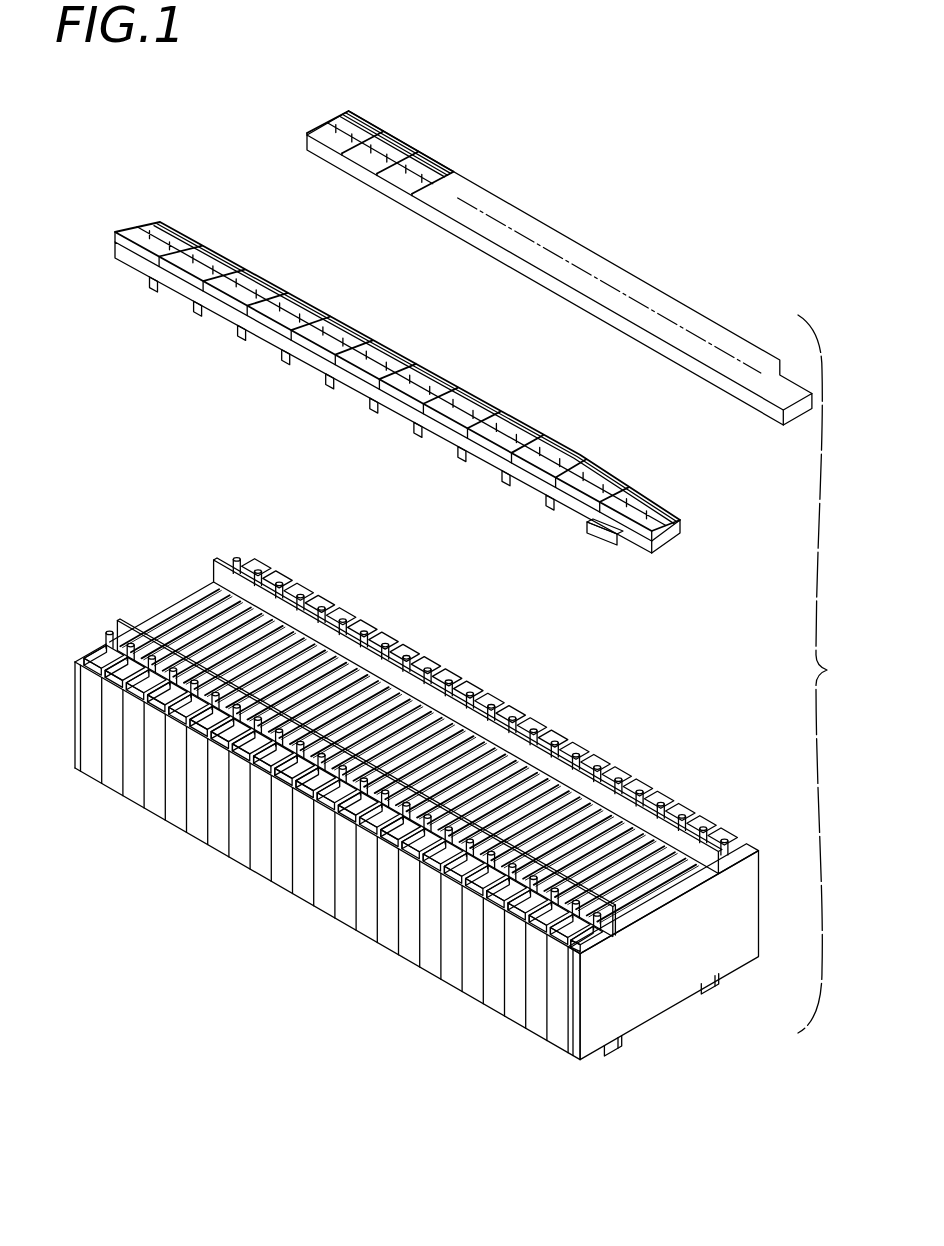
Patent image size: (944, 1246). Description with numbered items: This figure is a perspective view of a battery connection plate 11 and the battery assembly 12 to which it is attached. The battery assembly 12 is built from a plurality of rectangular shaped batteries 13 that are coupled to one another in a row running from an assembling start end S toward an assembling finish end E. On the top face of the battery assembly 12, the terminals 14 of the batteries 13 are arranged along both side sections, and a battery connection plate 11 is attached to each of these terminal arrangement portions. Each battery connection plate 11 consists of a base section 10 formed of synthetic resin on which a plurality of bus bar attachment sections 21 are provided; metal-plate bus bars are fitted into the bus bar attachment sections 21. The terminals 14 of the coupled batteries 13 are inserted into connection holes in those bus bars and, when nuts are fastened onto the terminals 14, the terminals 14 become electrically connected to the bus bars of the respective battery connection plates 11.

The base section 10 is at (463, 314).
The battery connection plate 11 is at (560, 213).
The battery assembly 12 is at (423, 772).
The battery 13 is at (88, 770).
The terminal 14 is at (105, 630).
The bus bar attachment section 21 is at (324, 122).
The assembling start end S is at (191, 578).
The assembling finish end E is at (760, 872).